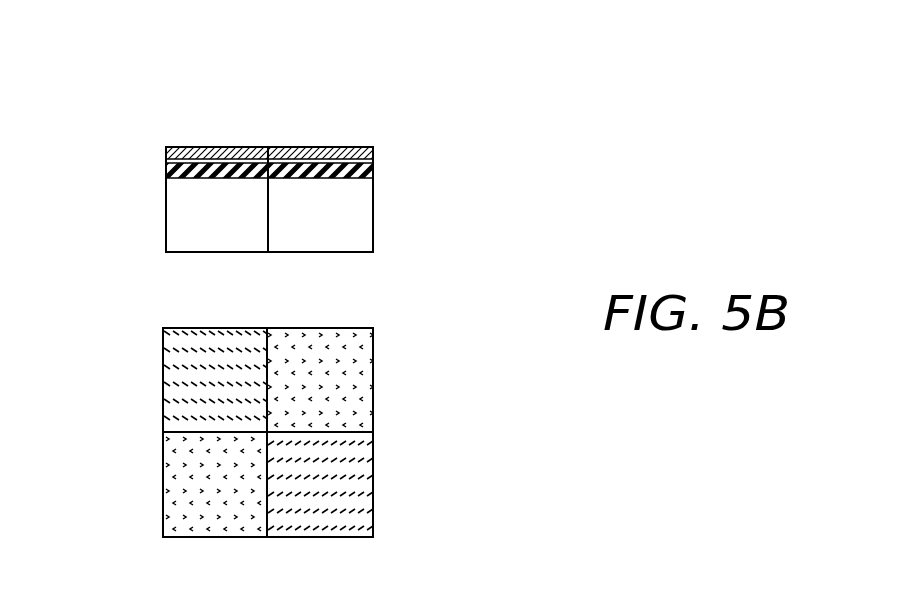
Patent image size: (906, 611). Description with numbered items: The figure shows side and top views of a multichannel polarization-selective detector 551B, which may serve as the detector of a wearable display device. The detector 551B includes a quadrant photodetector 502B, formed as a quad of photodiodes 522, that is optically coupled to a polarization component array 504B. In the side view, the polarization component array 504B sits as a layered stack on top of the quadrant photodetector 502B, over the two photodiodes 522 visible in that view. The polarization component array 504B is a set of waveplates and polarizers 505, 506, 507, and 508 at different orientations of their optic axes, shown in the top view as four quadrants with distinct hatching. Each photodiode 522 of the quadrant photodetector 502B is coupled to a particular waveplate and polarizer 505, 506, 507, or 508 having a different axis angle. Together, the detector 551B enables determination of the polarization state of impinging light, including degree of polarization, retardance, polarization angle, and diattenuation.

The multichannel polarization-selective detector 551B is at (118, 108).
The quadrant photodetector 502B is at (397, 217).
The polarization component array 504B is at (383, 148).
The photodiode 522 is at (238, 219).
The waveplate/polarizer 505 is at (180, 373).
The waveplate/polarizer 506 is at (355, 378).
The waveplate/polarizer 507 is at (229, 132).
The waveplate/polarizer 508 is at (328, 132).